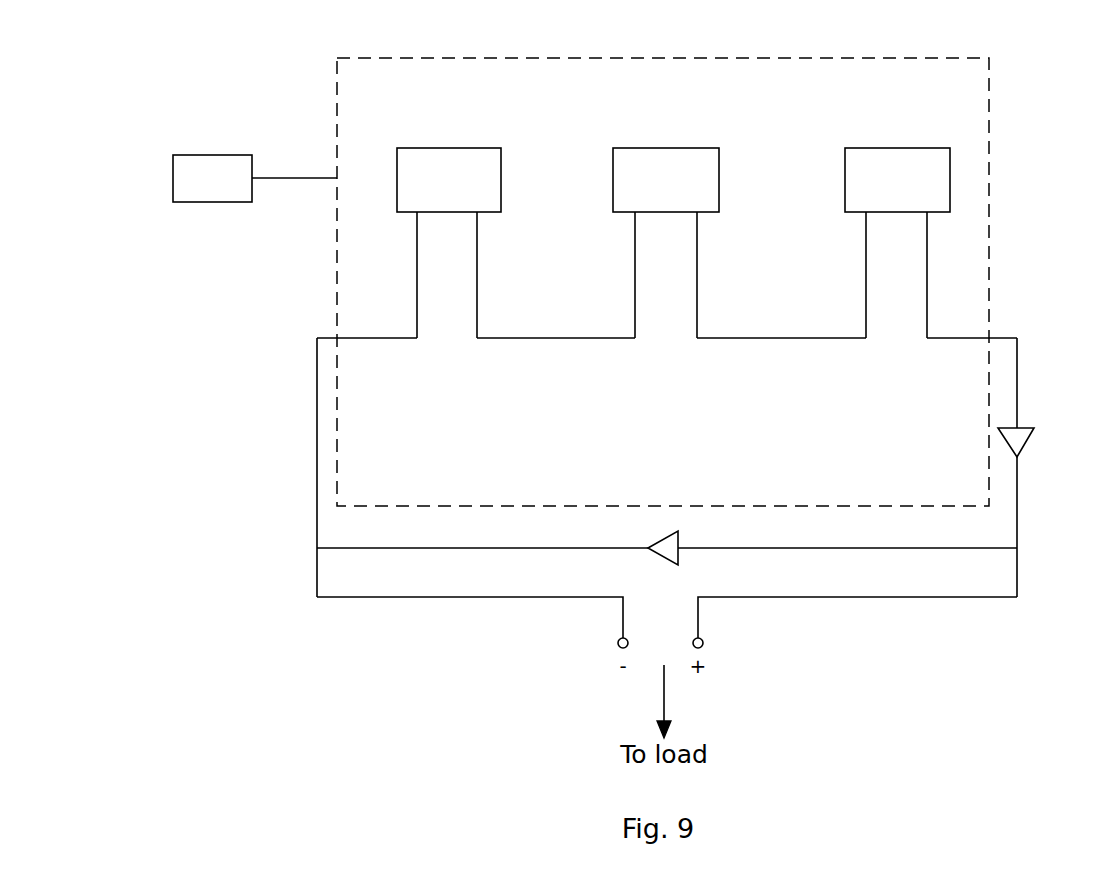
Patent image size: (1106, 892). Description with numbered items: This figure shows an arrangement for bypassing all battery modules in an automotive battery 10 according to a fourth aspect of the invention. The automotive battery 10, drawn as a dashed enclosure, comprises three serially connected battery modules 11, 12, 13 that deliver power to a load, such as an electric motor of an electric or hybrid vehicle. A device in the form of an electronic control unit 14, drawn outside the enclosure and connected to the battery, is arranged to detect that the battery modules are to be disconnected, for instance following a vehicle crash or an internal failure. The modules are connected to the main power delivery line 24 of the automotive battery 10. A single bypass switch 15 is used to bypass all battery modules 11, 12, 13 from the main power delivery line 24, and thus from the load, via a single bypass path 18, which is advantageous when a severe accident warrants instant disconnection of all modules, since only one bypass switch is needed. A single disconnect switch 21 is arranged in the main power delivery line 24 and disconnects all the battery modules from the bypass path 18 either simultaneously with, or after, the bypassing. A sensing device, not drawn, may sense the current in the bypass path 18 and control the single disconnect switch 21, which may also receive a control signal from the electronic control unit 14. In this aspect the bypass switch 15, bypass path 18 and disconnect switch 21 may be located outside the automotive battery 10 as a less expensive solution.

The automotive battery 10 is at (975, 93).
The first battery module 11 is at (477, 158).
The second battery module 12 is at (690, 167).
The third battery module 13 is at (920, 170).
The electronic control unit 14 is at (231, 168).
The single bypass switch 15 is at (682, 555).
The bypass path 18 is at (840, 548).
The single disconnect switch 21 is at (1033, 428).
The main power delivery line 24 is at (1000, 337).